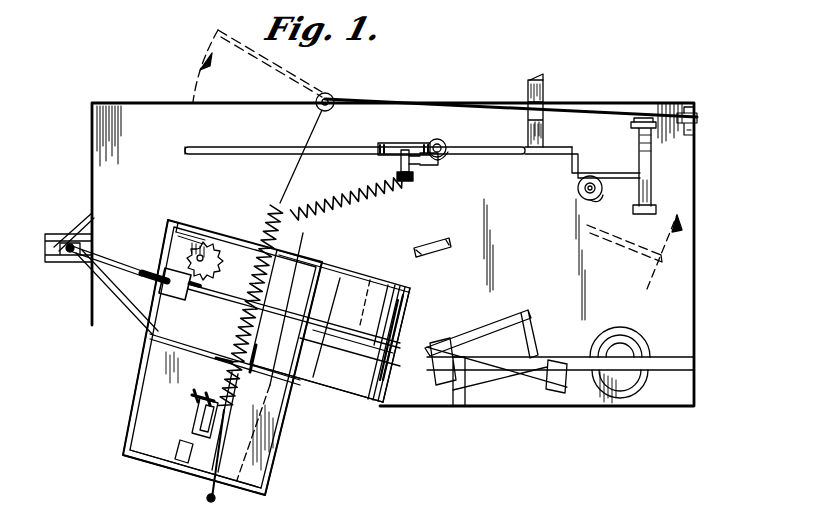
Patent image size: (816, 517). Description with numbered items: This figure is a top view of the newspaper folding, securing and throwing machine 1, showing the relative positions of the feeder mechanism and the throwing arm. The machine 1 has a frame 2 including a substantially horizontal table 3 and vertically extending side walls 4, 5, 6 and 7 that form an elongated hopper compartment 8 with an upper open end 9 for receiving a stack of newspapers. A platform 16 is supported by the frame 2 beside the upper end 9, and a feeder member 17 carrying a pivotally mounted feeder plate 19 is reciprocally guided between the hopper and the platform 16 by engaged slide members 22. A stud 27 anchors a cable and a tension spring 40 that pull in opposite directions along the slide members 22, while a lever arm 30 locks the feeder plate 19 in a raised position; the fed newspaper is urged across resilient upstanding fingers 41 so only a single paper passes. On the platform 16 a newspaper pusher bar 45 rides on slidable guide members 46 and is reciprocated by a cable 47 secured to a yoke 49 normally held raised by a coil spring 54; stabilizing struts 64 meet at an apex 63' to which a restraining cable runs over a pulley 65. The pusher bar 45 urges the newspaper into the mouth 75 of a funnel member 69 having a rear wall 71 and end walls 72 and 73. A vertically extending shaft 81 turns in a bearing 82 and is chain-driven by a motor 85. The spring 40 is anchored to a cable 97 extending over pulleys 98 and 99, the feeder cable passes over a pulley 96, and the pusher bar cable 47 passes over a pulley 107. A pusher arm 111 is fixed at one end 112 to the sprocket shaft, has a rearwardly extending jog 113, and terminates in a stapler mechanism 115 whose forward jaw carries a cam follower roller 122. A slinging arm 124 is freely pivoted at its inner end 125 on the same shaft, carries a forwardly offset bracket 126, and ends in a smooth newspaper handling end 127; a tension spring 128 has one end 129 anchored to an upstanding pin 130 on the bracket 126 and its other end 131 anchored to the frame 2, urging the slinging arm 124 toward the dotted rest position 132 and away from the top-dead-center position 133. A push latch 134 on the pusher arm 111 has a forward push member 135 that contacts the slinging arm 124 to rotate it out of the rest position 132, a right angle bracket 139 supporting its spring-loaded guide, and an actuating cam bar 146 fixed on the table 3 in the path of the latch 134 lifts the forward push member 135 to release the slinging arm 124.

The newspaper folding, securing and throwing machine 1 is at (712, 164).
The frame 2 is at (696, 270).
The horizontal table 3 is at (678, 243).
The side wall 4 is at (303, 233).
The side wall 5 is at (163, 466).
The side wall 6 is at (128, 434).
The side wall 7 is at (285, 383).
The hopper compartment 8 is at (148, 407).
The upper open end 9 is at (130, 444).
The platform 16 is at (315, 275).
The feeder member 17 is at (200, 416).
The feeder plate 19 is at (184, 465).
The slide members 22 is at (218, 372).
The stud 27 is at (245, 405).
The lever arm 30 is at (193, 393).
The tension spring 40 is at (266, 342).
The resilient upstanding fingers 41 is at (208, 345).
The newspaper pusher bar 45 is at (172, 222).
The guide members 46 is at (212, 287).
The cable 47 is at (352, 346).
The yoke 49 is at (188, 298).
The coil spring 54 is at (158, 282).
The apex 63' is at (89, 232).
The stabilizing struts 64 is at (104, 275).
The pulley 65 is at (48, 258).
The funnel member 69 is at (390, 288).
The rear wall 71 is at (366, 285).
The end wall 72 is at (357, 398).
The end wall 73 is at (424, 272).
The mouth 75 is at (350, 296).
The vertically extending shaft 81 is at (578, 190).
The bearing 82 is at (606, 184).
The motor 85 is at (640, 334).
The pulley 96 is at (211, 502).
The cable 97 is at (448, 87).
The pulley 98 is at (330, 93).
The pulley 99 is at (693, 117).
The pulley 107 is at (563, 394).
The pusher arm 111 is at (505, 154).
The end 112 is at (446, 165).
The jog 113 is at (588, 163).
The stapler mechanism 115 is at (652, 160).
The cam follower roller 122 is at (637, 115).
The slinging arm 124 is at (265, 147).
The inner end 125 is at (428, 142).
The offset bracket 126 is at (401, 165).
The newspaper handling end 127 is at (198, 147).
The tension spring 128 is at (340, 197).
The end 129 is at (413, 180).
The upstanding pin 130 is at (416, 168).
The other end 131 is at (208, 238).
The rotational rest position 132 is at (227, 40).
The top-dead-center position 133 is at (608, 248).
The push latch 134 is at (530, 125).
The forward push member 135 is at (540, 68).
The right angle bracket 139 is at (546, 138).
The actuating cam bar 146 is at (432, 247).